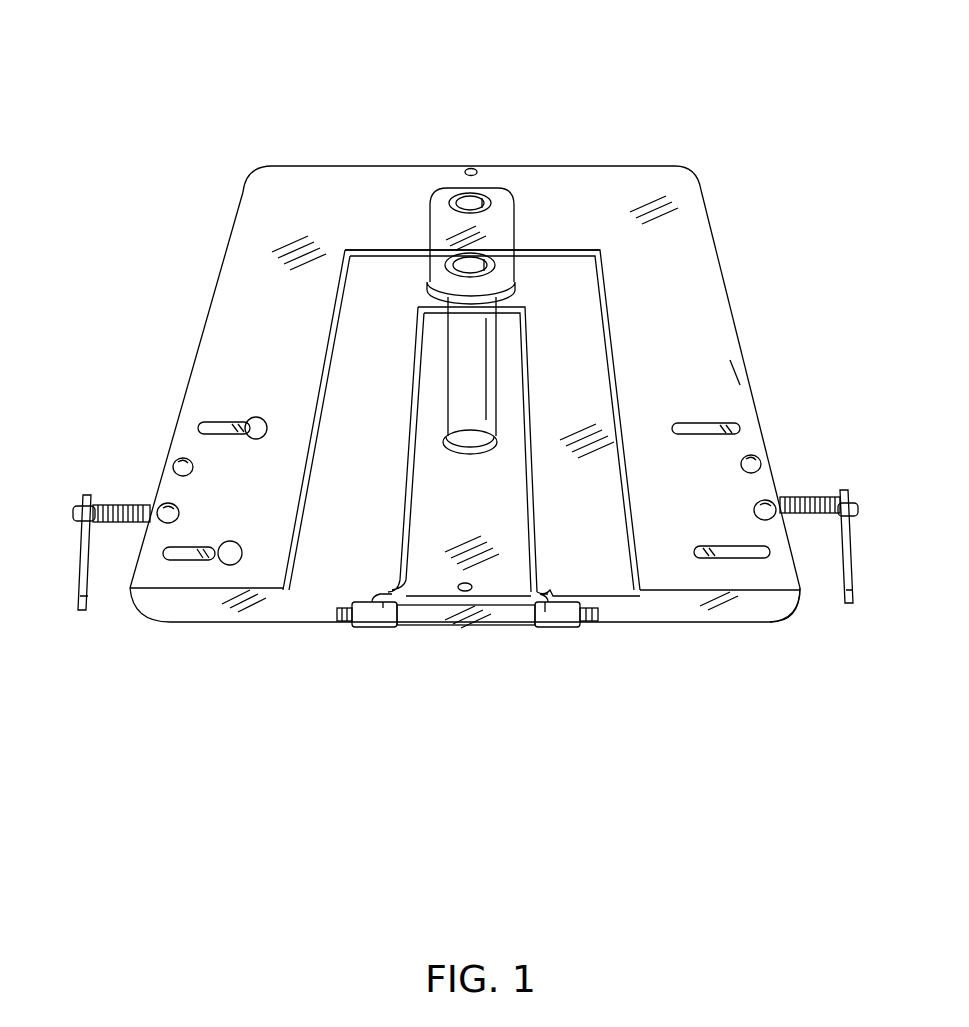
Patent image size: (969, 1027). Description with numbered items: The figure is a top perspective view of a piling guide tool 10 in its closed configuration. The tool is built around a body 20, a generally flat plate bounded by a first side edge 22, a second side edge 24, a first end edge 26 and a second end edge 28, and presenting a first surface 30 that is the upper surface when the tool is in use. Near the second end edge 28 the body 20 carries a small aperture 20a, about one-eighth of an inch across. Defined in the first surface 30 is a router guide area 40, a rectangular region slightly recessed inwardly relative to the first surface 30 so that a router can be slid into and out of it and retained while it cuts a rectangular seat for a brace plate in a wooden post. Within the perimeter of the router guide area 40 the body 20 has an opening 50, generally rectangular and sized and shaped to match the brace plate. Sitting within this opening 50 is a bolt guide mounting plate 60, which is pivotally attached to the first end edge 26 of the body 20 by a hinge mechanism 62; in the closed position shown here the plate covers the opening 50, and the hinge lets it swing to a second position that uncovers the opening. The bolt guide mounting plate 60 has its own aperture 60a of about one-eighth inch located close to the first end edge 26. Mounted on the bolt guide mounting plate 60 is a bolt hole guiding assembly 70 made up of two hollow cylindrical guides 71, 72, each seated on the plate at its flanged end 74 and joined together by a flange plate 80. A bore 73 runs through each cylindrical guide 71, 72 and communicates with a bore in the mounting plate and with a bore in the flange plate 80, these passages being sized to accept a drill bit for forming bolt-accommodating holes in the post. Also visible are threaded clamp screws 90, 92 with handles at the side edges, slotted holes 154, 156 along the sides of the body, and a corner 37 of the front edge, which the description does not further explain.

The piling guide tool 10 is at (494, 133).
The body 20 is at (468, 359).
The aperture 20a is at (471, 168).
The first side edge 22 is at (758, 412).
The second side edge 24 is at (190, 375).
The first end edge 26 is at (680, 615).
The second end edge 28 is at (585, 166).
The first surface 30 is at (735, 365).
The front corner 37 is at (778, 618).
The router guide area 40 is at (585, 428).
The opening 50 is at (515, 312).
The bolt guide mounting plate 60 is at (464, 582).
The aperture 60a is at (464, 591).
The hinge mechanism 62 is at (525, 630).
The bolt hole guiding assembly 70 is at (558, 200).
The cylindrical guide 71 is at (478, 198).
The cylindrical guide 72 is at (470, 395).
The bore 73 is at (462, 198).
The flanged end 74 is at (453, 450).
The flange plate 80 is at (508, 215).
The right clamp screw 90 is at (852, 503).
The left clamp screw 92 is at (76, 507).
The lower slot 154 is at (205, 553).
The upper slot 156 is at (215, 425).